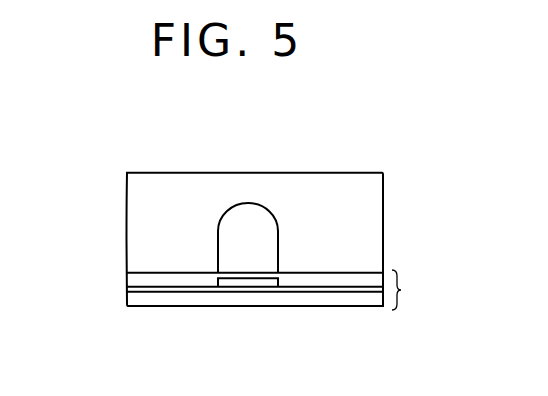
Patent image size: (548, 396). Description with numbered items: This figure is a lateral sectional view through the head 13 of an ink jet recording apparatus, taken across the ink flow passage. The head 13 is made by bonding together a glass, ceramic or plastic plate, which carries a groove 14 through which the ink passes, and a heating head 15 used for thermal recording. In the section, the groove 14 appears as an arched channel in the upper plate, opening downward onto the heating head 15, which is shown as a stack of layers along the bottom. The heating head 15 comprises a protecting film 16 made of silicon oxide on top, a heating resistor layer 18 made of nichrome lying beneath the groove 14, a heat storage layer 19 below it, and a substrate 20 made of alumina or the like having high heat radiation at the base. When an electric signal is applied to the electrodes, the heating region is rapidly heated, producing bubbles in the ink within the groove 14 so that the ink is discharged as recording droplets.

The head 13 is at (153, 172).
The groove 14 is at (252, 202).
The heating head 15 is at (414, 290).
The protecting film 16 is at (337, 272).
The heating resistor layer 18 is at (248, 283).
The heat storage layer 19 is at (357, 291).
The substrate 20 is at (342, 300).